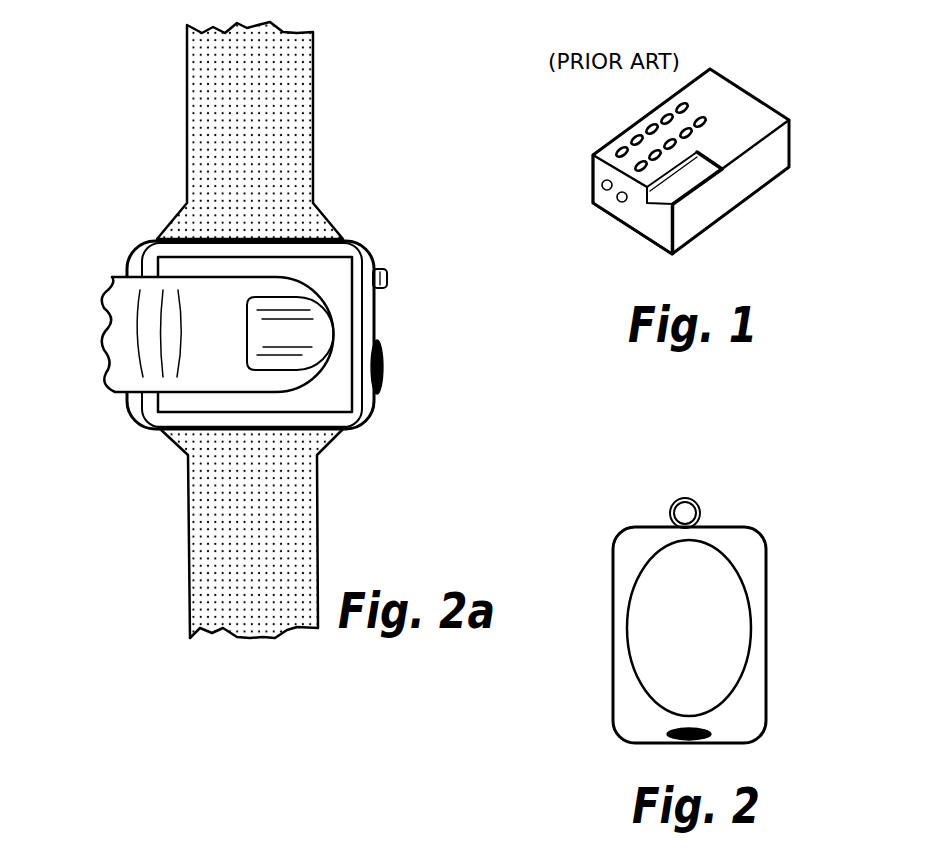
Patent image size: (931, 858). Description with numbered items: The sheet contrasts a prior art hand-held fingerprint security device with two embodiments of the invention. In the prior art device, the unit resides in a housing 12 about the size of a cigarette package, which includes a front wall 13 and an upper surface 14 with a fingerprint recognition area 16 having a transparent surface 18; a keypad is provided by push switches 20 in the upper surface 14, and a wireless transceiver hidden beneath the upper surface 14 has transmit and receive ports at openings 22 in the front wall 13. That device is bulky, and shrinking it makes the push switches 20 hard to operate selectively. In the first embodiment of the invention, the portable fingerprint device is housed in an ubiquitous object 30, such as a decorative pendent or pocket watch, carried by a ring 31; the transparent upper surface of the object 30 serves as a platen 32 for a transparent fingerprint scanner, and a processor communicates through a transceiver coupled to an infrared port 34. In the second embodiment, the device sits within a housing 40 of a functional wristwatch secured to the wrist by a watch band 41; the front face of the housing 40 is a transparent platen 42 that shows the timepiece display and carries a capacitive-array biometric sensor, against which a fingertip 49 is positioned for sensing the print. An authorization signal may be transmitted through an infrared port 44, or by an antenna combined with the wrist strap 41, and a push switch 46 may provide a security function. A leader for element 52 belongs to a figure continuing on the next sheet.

In FIG. 1, the housing 12 is at (731, 76).
In FIG. 1, the front wall 13 is at (640, 223).
In FIG. 1, the upper surface 14 is at (735, 117).
In FIG. 1, the fingerprint recognition area 16 is at (705, 147).
In FIG. 1, the transparent surface 18 is at (657, 205).
In FIG. 1, the push switches 20 is at (665, 115).
In FIG. 1, the openings 22 is at (621, 200).
In FIG. 2, the ubiquitous object 30 is at (729, 527).
In FIG. 2, the key ring 31 is at (684, 497).
In FIG. 2, the platen 32 is at (733, 614).
In FIG. 2, the infrared port 34 is at (717, 729).
In FIG. 2A, the housing 40 is at (357, 240).
In FIG. 2A, the watch band 41 is at (313, 80).
In FIG. 2A, the transparent platen 42 is at (345, 313).
In FIG. 2A, the infrared port 44 is at (387, 363).
In FIG. 2A, the push switch 46 is at (390, 278).
In FIG. 2A, the fingertip 49 is at (123, 277).
In FIG. 2A, the cable 52 is at (294, 857).